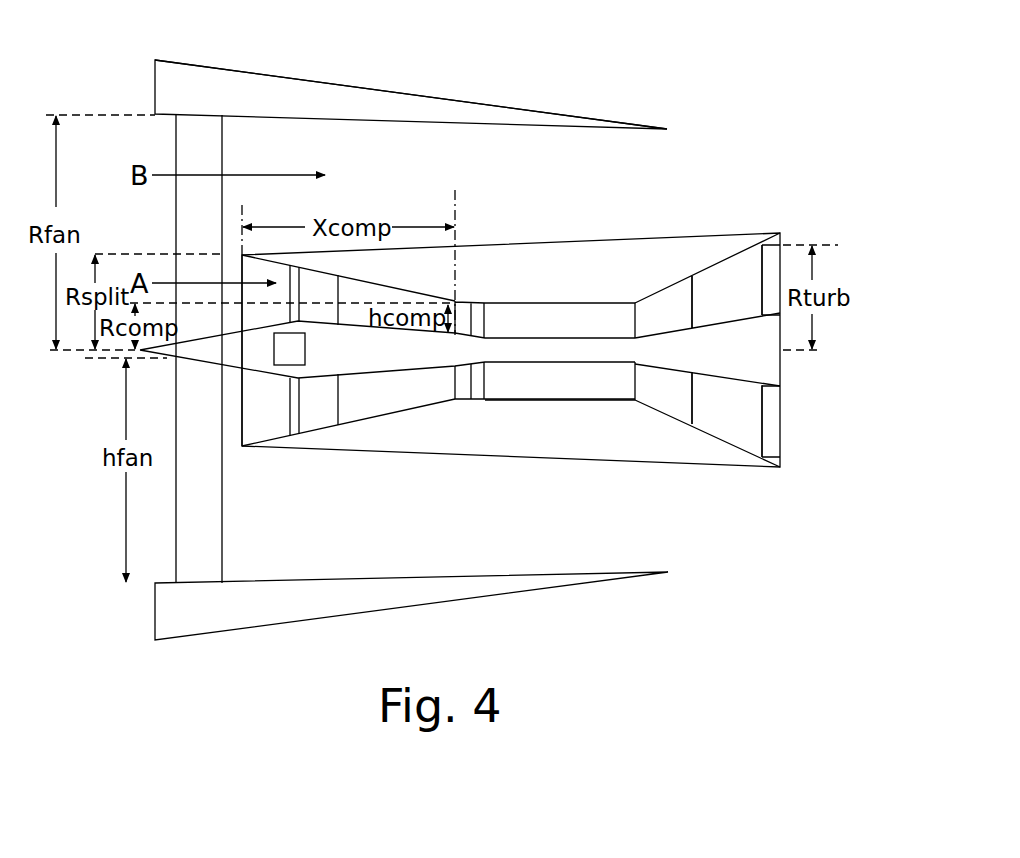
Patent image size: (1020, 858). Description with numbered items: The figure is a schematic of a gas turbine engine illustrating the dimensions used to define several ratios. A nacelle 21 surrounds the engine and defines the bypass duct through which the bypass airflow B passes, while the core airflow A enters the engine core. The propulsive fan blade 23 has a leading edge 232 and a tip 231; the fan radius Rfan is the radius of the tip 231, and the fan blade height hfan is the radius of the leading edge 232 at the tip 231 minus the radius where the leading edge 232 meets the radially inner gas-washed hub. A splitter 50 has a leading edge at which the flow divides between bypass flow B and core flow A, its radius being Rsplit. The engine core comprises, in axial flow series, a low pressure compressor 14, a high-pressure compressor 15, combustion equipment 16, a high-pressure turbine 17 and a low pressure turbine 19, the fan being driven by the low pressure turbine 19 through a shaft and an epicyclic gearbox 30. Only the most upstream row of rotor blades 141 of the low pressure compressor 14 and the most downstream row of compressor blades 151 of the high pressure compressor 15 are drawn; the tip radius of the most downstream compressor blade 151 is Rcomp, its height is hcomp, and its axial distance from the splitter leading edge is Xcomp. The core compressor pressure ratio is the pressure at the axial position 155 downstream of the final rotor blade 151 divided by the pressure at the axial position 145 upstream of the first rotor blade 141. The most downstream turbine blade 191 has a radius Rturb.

The nacelle 21 is at (327, 95).
The tip of the fan blade 231 is at (200, 114).
The leading edge of the fan blade 232 is at (176, 127).
The fan blade 23 is at (210, 553).
The axial position upstream of the first rotor blade 145 is at (278, 283).
The low pressure compressor 14 is at (325, 420).
The first rotor blade 141 is at (297, 437).
The high-pressure compressor 15 is at (405, 398).
The most downstream compressor blade 151 is at (464, 308).
The axial position downstream of the final rotor blade 155 is at (478, 316).
The combustion equipment 16 is at (557, 318).
The high-pressure turbine 17 is at (668, 403).
The low pressure turbine 19 is at (730, 427).
The most downstream turbine blade 191 is at (770, 437).
The epicyclic gearbox 30 is at (289, 350).
The splitter 50 is at (243, 448).